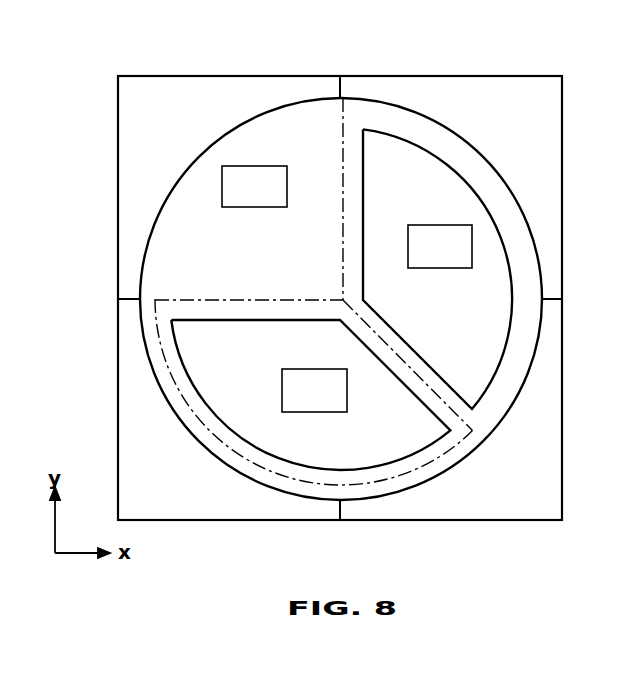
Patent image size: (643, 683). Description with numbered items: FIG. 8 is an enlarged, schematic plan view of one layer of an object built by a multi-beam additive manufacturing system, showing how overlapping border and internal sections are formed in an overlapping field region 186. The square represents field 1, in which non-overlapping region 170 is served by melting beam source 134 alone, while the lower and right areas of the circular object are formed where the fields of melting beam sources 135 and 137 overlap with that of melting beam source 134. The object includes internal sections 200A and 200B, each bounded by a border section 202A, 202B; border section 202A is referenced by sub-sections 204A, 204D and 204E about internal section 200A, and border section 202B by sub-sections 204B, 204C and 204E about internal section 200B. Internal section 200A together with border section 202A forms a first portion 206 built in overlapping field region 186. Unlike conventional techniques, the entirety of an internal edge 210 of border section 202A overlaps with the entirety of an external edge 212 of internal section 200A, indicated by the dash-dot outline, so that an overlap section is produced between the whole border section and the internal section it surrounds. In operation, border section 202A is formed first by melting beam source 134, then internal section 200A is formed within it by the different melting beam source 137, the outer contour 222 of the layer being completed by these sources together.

The field 1 is at (145, 105).
The non-overlapping region 170 is at (137, 147).
The overlapping field region 186 is at (100, 418).
The circular outer boundary 222 is at (262, 142).
The internal section 200A is at (290, 435).
The internal section 200B is at (490, 283).
The external edge 212 is at (155, 300).
The first portion 206 is at (165, 371).
The internal edge 210 is at (255, 340).
The sub-section 204A is at (416, 474).
The sub-section 204B is at (528, 313).
The sub-section 204C is at (363, 203).
The sub-section 204D is at (323, 340).
The sub-section 204E is at (448, 388).
The border section 202A is at (218, 463).
The border section 202B is at (14, 468).
The melting beam source 134 is at (234, 197).
The melting beam source 135 is at (420, 258).
The melting beam source 137 is at (294, 402).